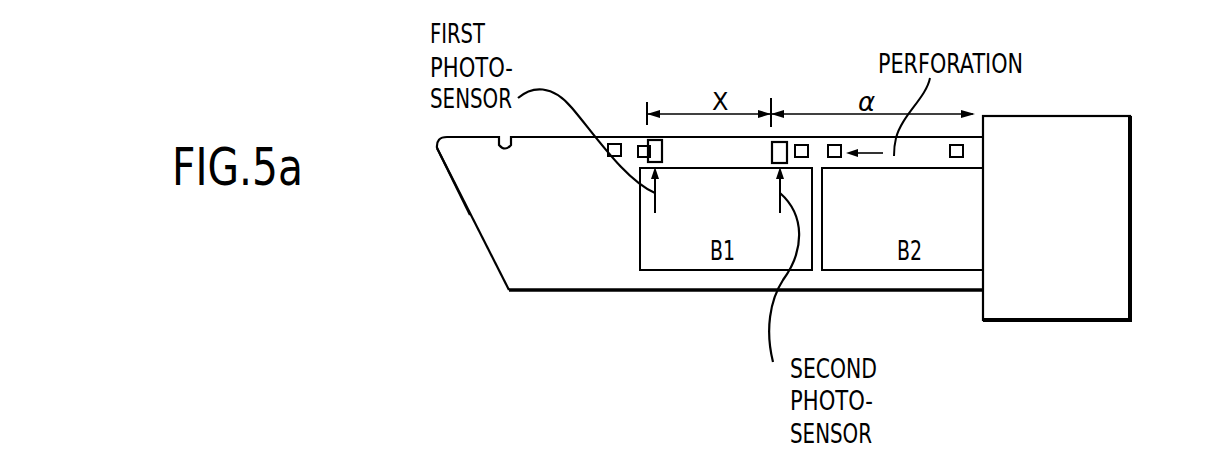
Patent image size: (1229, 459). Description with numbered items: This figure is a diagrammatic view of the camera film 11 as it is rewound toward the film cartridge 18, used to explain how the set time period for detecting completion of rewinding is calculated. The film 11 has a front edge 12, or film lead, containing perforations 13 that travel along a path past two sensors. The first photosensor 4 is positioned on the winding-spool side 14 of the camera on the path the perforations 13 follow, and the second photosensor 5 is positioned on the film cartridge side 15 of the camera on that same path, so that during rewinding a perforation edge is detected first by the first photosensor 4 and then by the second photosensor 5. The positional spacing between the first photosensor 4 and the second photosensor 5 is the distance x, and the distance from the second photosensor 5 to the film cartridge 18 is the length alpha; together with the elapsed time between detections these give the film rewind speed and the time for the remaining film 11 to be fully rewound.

The first photosensor 4 is at (655, 140).
The second photosensor 5 is at (780, 142).
The film 11 is at (560, 280).
The front edge 12 is at (468, 212).
The perforations 13 is at (614, 144).
The winding-spool side 14 is at (370, 243).
The film cartridge side 15 is at (1222, 232).
The film cartridge 18 is at (1043, 305).